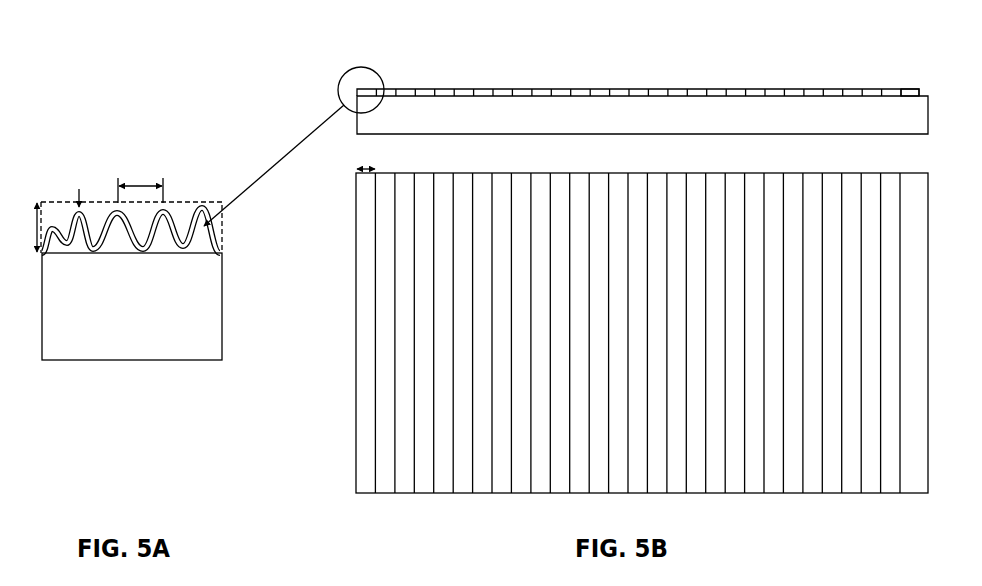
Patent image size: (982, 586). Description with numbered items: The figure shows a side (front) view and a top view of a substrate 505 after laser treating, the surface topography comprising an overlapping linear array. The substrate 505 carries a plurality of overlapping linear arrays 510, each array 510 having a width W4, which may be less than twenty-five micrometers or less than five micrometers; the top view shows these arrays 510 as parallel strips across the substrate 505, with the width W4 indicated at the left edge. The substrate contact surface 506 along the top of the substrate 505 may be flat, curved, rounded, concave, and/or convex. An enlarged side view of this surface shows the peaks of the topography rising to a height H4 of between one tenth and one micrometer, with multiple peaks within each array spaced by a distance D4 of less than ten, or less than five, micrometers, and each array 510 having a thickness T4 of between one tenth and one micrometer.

In FIG. 5B, the substrate 505 is at (533, 120).
In FIG. 5B, the substrate contact surface 506 is at (420, 88).
In FIG. 5B, the overlapping linear array 510 is at (558, 89).
In FIG. 5A, the height H4 is at (9, 234).
In FIG. 5A, the thickness T4 is at (79, 192).
In FIG. 5A, the distance D4 is at (140, 184).
In FIG. 5B, the width W4 is at (365, 158).